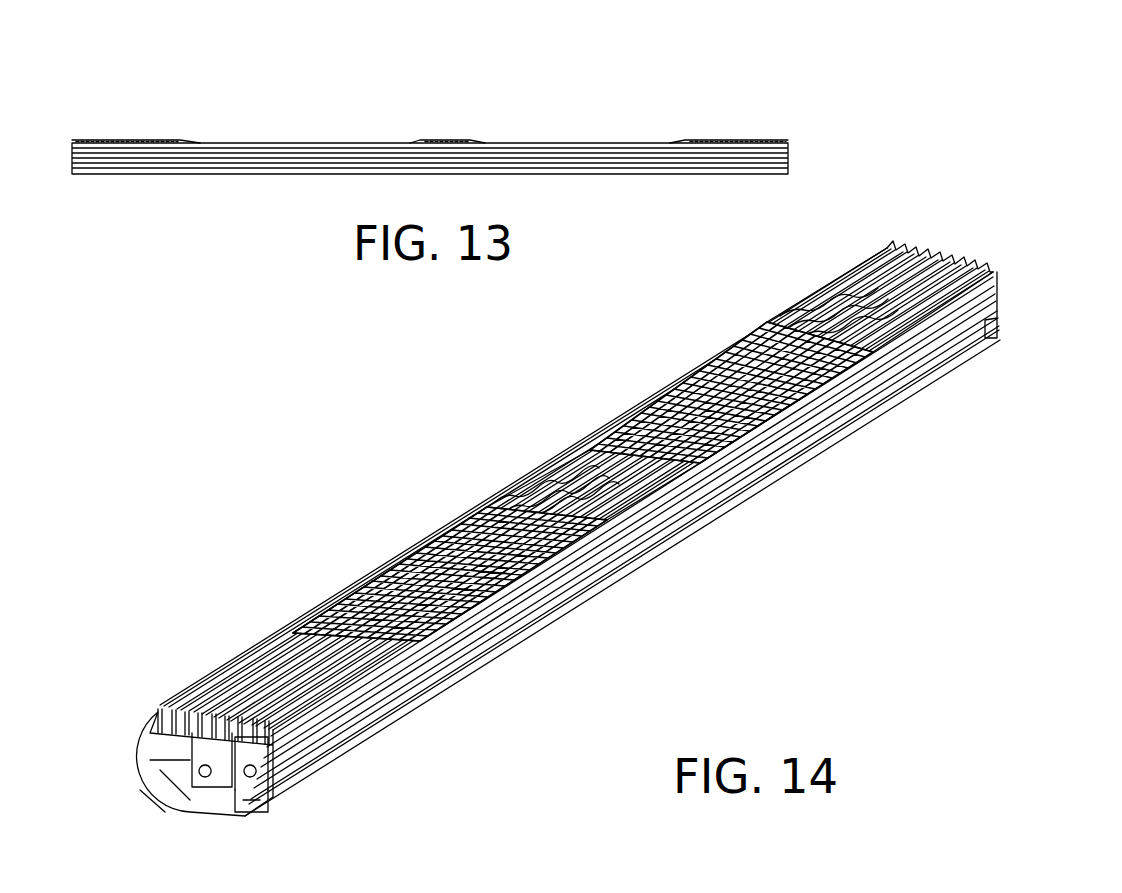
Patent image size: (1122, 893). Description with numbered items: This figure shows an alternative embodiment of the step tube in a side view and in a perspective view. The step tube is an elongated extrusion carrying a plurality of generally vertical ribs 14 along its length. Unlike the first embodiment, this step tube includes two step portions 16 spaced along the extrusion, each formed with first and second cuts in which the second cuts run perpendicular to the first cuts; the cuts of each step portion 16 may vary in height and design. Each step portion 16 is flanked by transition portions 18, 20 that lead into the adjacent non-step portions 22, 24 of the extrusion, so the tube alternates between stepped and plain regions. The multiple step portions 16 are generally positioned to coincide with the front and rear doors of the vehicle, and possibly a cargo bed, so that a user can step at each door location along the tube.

In FIG. 14, the vertical ribs 14 is at (197, 684).
In FIG. 13, the step portion 16 is at (533, 143).
In FIG. 14, the step portion 16 is at (612, 432).
In FIG. 14, the transition portion 18 is at (328, 617).
In FIG. 14, the transition portion 20 is at (800, 300).
In FIG. 14, the non-step portion 22 is at (293, 773).
In FIG. 14, the non-step portion 24 is at (960, 323).